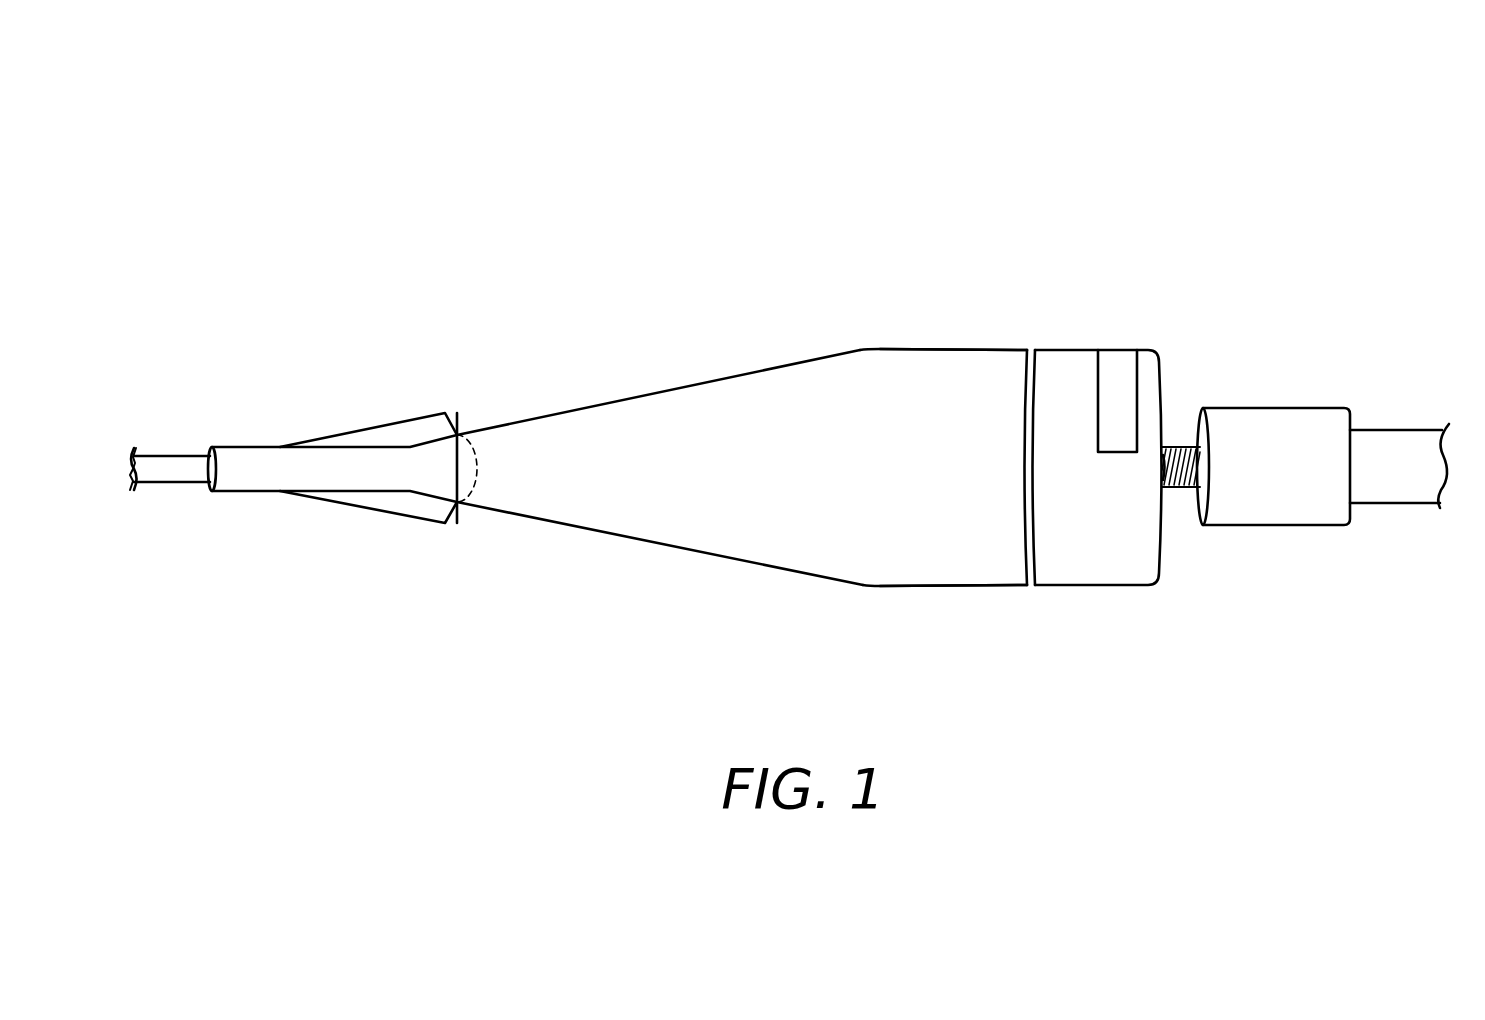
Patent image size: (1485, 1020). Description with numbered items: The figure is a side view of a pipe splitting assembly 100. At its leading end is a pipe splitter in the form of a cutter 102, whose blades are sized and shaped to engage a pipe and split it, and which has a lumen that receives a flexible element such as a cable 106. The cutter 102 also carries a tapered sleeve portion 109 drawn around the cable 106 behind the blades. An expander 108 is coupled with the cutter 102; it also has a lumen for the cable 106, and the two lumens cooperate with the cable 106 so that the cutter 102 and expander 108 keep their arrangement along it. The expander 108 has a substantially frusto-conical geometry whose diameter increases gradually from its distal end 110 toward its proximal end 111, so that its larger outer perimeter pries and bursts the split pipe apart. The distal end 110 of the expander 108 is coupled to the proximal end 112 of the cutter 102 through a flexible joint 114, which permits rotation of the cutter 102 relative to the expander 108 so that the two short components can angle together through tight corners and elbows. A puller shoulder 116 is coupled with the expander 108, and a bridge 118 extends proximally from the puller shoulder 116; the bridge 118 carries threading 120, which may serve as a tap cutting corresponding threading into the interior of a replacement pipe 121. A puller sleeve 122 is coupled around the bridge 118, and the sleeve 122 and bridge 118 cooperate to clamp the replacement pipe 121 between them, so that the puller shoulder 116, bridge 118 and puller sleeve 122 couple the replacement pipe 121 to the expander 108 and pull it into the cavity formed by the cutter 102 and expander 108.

The pipe splitting assembly 100 is at (350, 198).
The cutter 102 is at (250, 493).
The cable 106 is at (176, 455).
The expander 108 is at (782, 557).
The tapered sleeve 109 is at (393, 432).
The distal end 110 is at (508, 502).
The proximal end 111 is at (926, 360).
The proximal end 112 is at (457, 433).
The flexible joint 114 is at (457, 503).
The puller shoulder 116 is at (335, 455).
The bridge 118 is at (1185, 495).
The threading 120 is at (1182, 440).
The replacement pipe 121 is at (1393, 440).
The puller sleeve 122 is at (1278, 415).